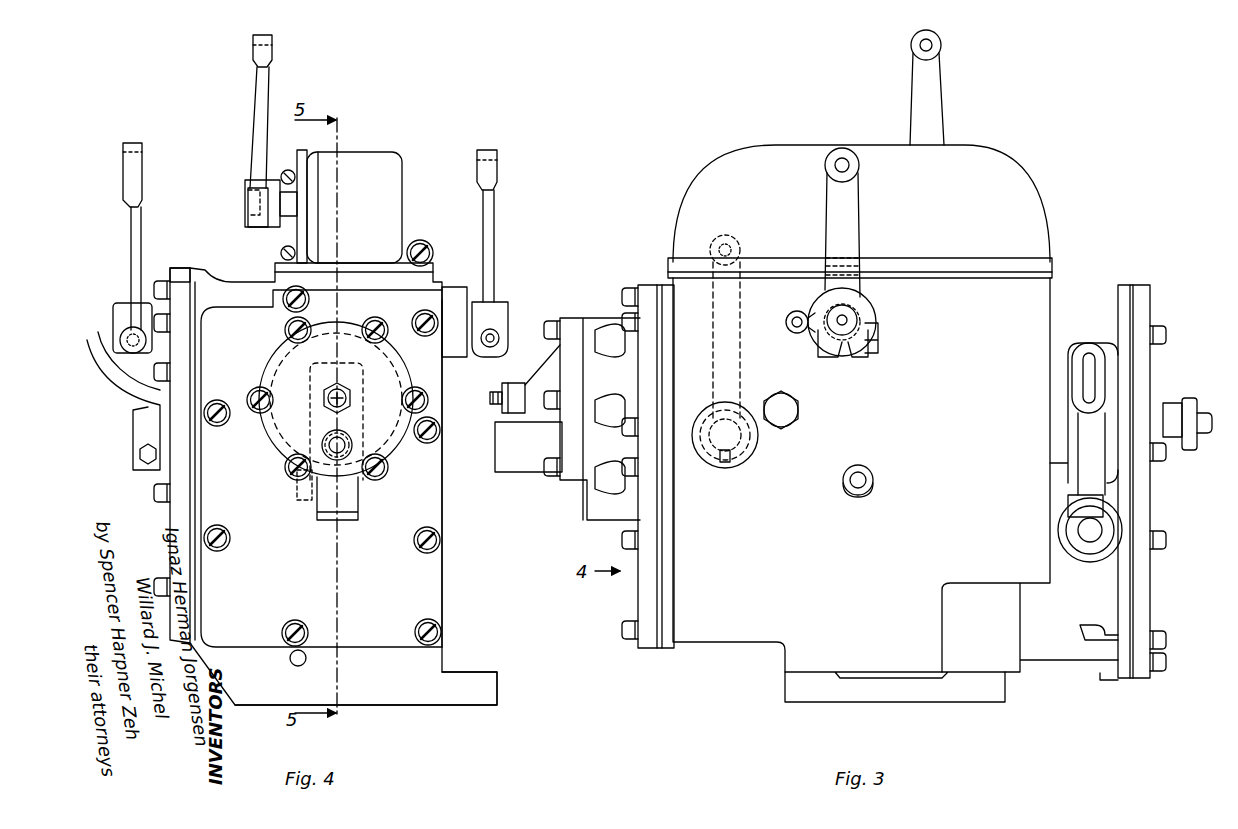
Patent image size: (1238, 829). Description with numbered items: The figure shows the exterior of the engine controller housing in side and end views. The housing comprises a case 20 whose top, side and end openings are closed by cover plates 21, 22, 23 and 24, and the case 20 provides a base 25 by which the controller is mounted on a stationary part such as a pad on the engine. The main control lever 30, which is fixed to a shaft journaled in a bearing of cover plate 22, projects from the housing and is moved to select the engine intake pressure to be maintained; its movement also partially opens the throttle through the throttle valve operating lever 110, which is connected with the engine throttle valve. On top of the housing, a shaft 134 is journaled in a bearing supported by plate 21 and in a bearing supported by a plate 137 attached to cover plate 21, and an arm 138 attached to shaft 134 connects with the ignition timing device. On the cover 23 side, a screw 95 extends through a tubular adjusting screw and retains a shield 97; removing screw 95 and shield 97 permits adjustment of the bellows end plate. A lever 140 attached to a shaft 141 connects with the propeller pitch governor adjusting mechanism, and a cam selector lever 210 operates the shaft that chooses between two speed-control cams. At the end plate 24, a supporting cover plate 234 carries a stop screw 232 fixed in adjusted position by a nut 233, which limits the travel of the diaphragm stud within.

In FIG. 4, the case 20 is at (225, 278).
In FIG. 3, the case 20 is at (700, 645).
In FIG. 4, the cover plate 21 is at (396, 152).
In FIG. 3, the cover plate 21 is at (724, 175).
In FIG. 4, the cover plate 22 is at (177, 268).
In FIG. 3, the cover plate 23 is at (1151, 578).
In FIG. 4, the cover plate 24 is at (442, 582).
In FIG. 3, the cover plate 24 is at (645, 598).
In FIG. 4, the base 25 is at (497, 688).
In FIG. 3, the base 25 is at (785, 690).
In FIG. 4, the main control lever 30 is at (123, 150).
In FIG. 3, the main control lever 30 is at (847, 148).
In FIG. 3, the screw 95 is at (1211, 420).
In FIG. 3, the shield 97 is at (1198, 395).
In FIG. 4, the throttle valve operating lever 110 is at (98, 330).
In FIG. 4, the shaft 134 is at (246, 199).
In FIG. 4, the plate 137 is at (311, 150).
In FIG. 4, the arm 138 is at (258, 108).
In FIG. 3, the arm 138 is at (940, 103).
In FIG. 3, the lever 140 is at (1082, 434).
In FIG. 3, the shaft 141 is at (1085, 530).
In FIG. 4, the cam selector lever 210 is at (496, 224).
In FIG. 4, the stop screw 232 is at (352, 410).
In FIG. 3, the stop screw 232 is at (490, 398).
In FIG. 4, the nut 233 is at (351, 395).
In FIG. 3, the nut 233 is at (515, 379).
In FIG. 4, the supporting cover plate 234 is at (292, 424).
In FIG. 3, the supporting cover plate 234 is at (575, 488).